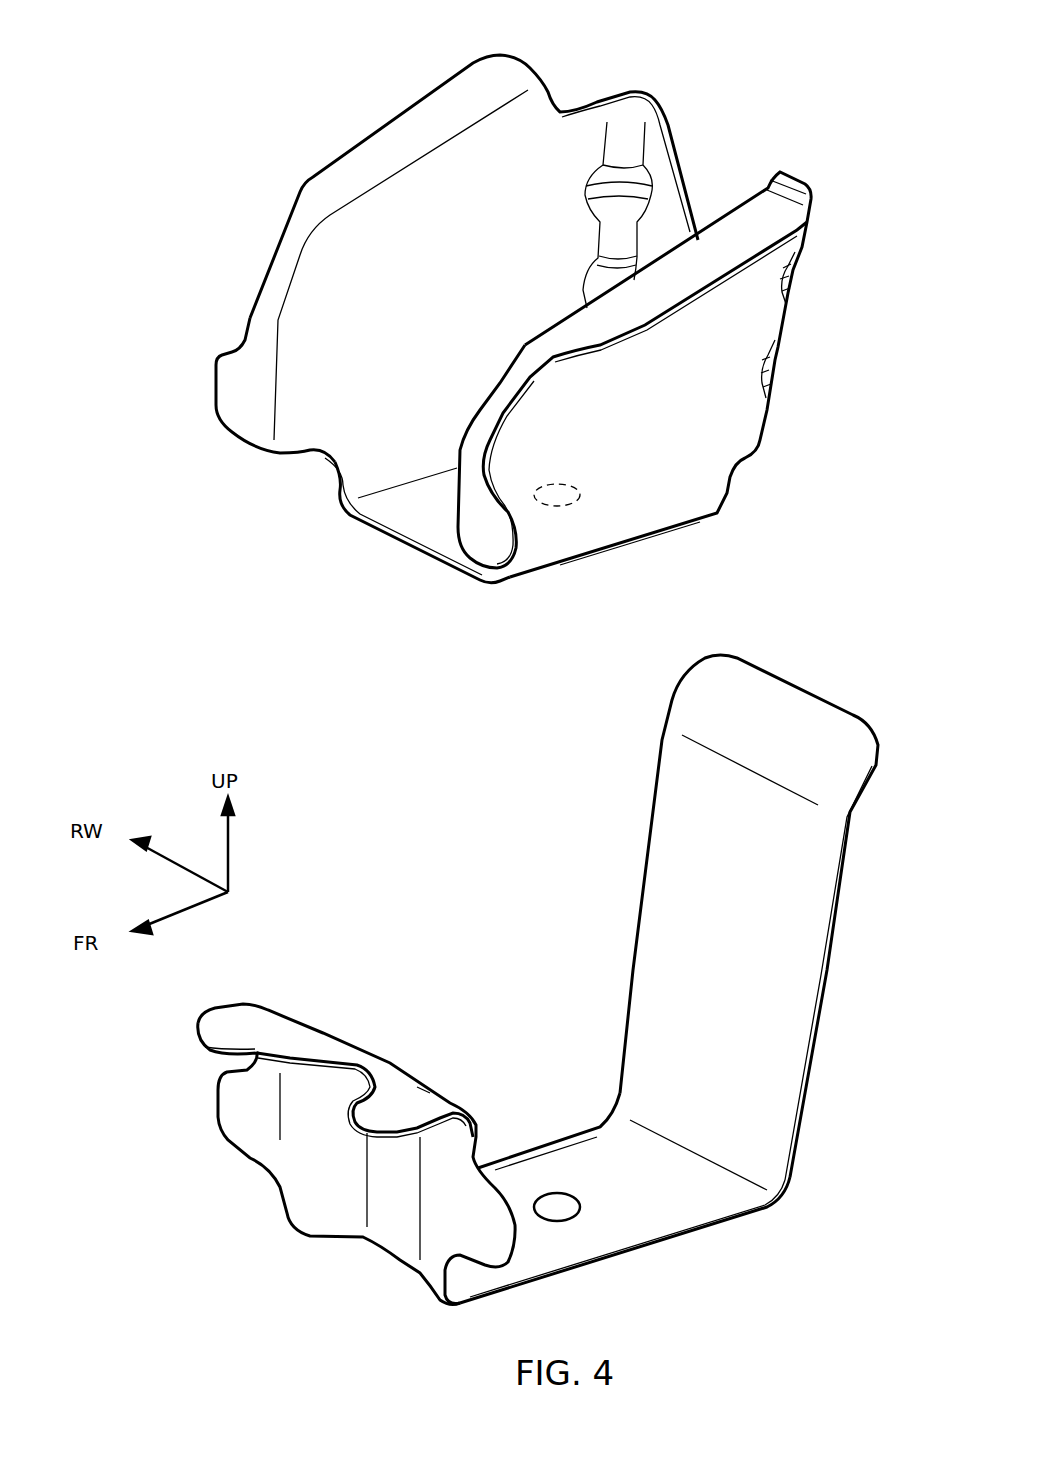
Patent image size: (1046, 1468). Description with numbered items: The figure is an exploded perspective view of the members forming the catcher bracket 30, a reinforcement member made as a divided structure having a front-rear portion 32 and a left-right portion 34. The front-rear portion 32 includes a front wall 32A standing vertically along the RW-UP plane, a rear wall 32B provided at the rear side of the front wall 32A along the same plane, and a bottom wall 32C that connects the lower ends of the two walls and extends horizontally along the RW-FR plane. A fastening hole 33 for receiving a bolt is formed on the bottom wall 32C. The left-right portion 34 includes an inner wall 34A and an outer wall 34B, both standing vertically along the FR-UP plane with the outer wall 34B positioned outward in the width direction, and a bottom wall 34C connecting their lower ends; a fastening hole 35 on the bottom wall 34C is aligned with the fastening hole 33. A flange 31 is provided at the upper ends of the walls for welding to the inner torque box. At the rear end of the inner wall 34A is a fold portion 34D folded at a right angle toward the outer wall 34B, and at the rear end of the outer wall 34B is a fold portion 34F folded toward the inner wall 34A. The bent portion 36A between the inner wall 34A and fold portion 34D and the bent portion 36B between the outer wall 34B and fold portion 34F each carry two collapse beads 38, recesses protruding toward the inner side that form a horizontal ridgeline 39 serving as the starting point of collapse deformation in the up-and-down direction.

The catcher bracket 30 is at (400, 705).
The flange 31 is at (427, 123).
The front-rear portion 32 is at (353, 958).
The front wall 32A is at (310, 1160).
The rear wall 32B is at (777, 993).
The bottom wall 32C is at (683, 1213).
The fastening hole 33 is at (560, 1193).
The left-right portion 34 is at (438, 613).
The inner wall 34A is at (670, 490).
The outer wall 34B is at (420, 210).
The bottom wall 34C is at (385, 512).
The fold portion 34D is at (765, 182).
The fold portion 34F is at (660, 167).
The fastening hole 35 is at (572, 507).
The bent portion 36A is at (808, 181).
The bent portion 36B is at (633, 83).
The collapse bead 38 is at (578, 188).
The ridgeline 39 is at (600, 197).